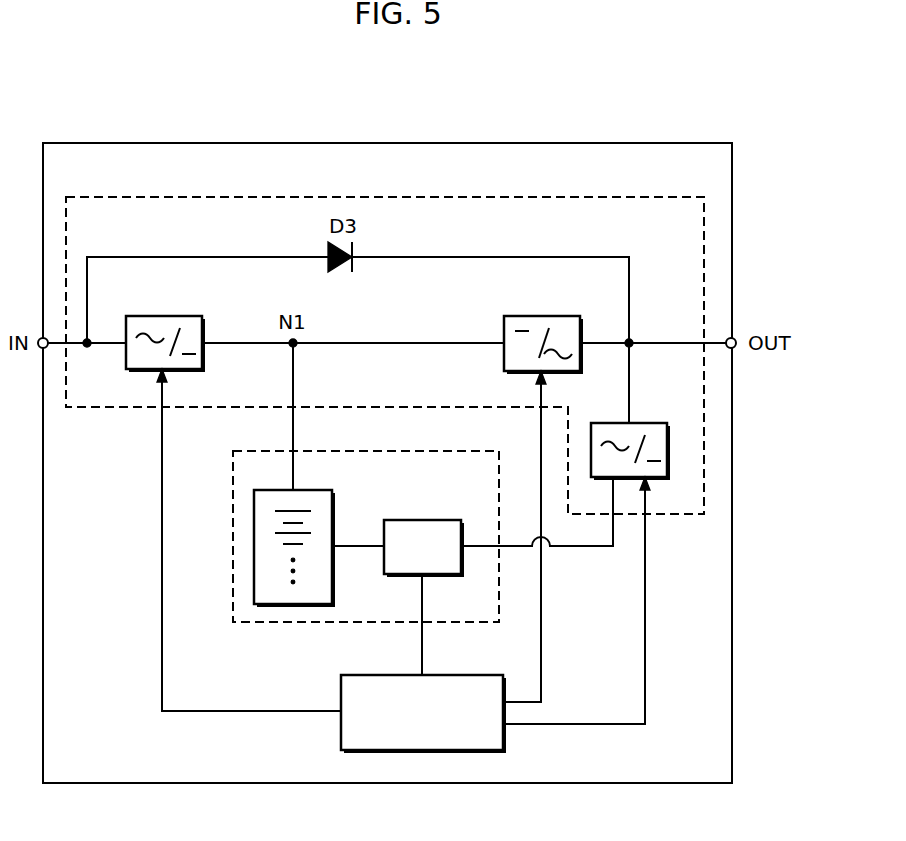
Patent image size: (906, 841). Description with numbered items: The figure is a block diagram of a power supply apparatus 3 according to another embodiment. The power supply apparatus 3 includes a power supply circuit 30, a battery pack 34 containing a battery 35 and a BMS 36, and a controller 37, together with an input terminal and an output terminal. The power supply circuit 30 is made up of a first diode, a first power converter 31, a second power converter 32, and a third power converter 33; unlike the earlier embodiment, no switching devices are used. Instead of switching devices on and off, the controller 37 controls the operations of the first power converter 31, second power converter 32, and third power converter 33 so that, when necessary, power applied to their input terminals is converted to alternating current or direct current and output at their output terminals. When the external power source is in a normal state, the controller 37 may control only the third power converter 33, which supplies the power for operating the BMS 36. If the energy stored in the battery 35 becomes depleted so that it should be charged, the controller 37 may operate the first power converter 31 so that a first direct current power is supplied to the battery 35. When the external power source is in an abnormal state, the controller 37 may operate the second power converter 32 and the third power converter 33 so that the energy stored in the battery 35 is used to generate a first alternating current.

The power supply apparatus 3 is at (604, 114).
The power supply circuit 30 is at (466, 197).
The first power converter 31 is at (167, 315).
The second power converter 32 is at (545, 316).
The third power converter 33 is at (648, 421).
The battery pack 34 is at (425, 450).
The battery 35 is at (308, 489).
The BMS 36 is at (424, 519).
The controller 37 is at (450, 674).